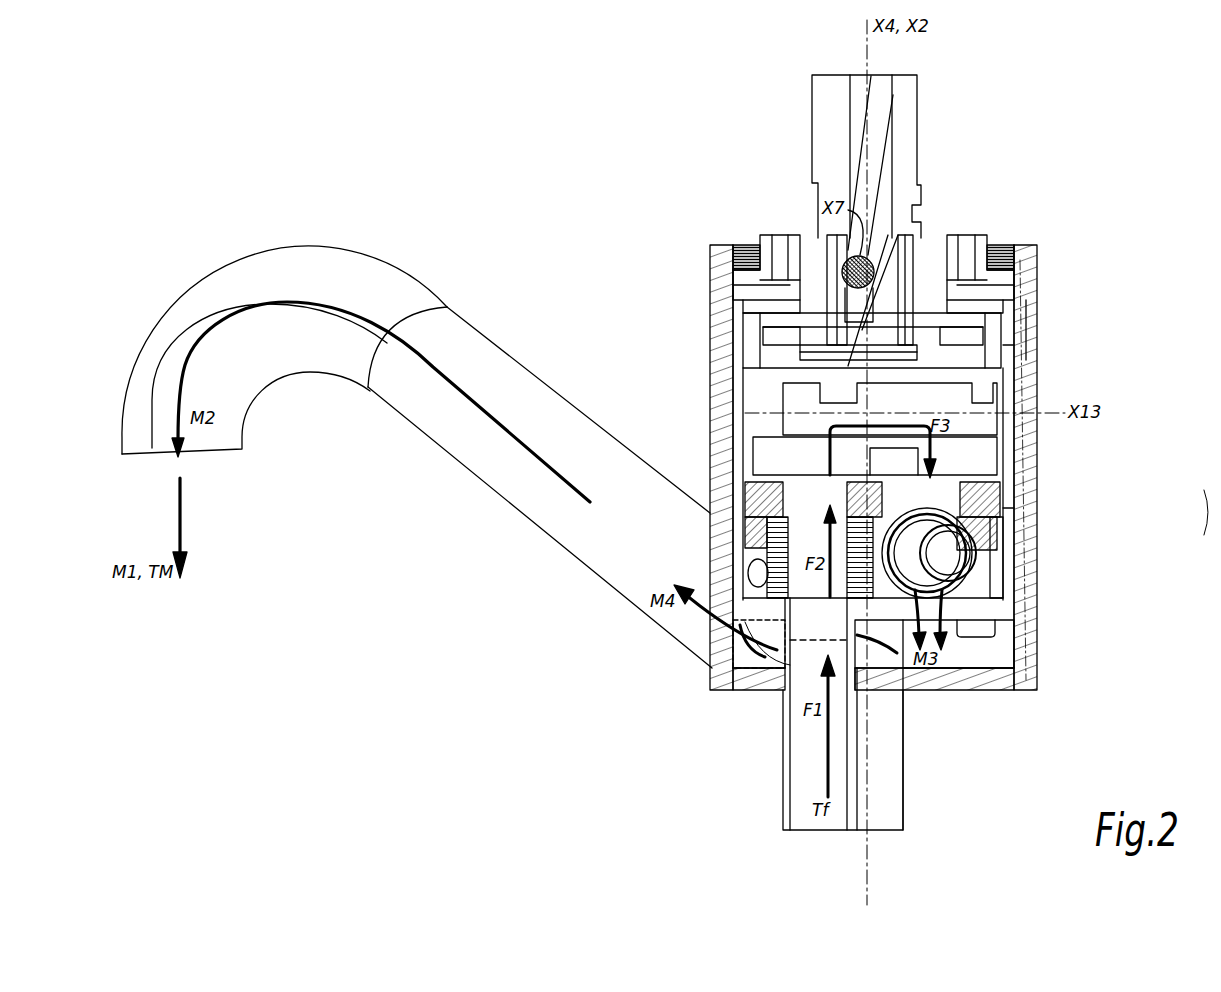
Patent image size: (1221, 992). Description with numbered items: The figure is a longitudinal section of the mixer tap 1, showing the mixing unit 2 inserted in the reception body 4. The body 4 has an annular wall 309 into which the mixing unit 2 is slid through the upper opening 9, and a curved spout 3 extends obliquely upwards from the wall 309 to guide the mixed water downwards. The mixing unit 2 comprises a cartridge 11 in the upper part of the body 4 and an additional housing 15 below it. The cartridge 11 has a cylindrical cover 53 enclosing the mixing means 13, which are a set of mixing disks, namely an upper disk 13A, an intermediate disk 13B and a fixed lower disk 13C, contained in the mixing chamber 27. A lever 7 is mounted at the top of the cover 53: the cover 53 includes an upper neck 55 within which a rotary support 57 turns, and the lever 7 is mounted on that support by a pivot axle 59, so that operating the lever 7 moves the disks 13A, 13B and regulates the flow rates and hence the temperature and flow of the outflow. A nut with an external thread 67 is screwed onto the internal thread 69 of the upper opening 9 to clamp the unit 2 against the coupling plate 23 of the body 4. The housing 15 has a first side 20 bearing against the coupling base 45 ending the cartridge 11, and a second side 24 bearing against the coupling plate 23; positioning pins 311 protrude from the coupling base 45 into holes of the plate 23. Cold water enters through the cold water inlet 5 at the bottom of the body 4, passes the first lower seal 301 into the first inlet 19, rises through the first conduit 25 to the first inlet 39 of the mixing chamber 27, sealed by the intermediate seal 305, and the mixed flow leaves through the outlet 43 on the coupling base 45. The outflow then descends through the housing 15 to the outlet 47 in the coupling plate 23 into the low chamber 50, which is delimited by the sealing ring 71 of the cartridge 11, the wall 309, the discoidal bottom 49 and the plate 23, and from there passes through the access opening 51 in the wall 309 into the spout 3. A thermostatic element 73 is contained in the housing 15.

The mixer tap 1 is at (548, 196).
The mixing unit 2 is at (1212, 512).
The spout 3 is at (292, 272).
The reception body 4 is at (1030, 437).
The cold water inlet 5 is at (805, 763).
The lever 7 is at (905, 115).
The upper opening 9 is at (1005, 245).
The cartridge 11 is at (1007, 347).
The mixing means 13 is at (780, 421).
The upper disk 13A is at (770, 378).
The intermediate disk 13B is at (785, 400).
The lower disk 13C is at (762, 455).
The additional housing 15 is at (1010, 508).
The first inlet 19 is at (832, 640).
The first side 20 is at (894, 461).
The coupling plate 23 is at (963, 690).
The second side 24 is at (752, 655).
The first conduit 25 is at (803, 633).
The mixing chamber 27 is at (708, 345).
The first inlet of the mixing chamber 39 is at (742, 534).
The outlet 43 is at (1010, 472).
The coupling base 45 is at (950, 537).
The outlet 47 is at (905, 695).
The bottom 49 is at (998, 680).
The low chamber 50 is at (1035, 658).
The access opening 51 is at (775, 690).
The cover 53 is at (708, 320).
The upper neck 55 is at (920, 253).
The rotary support 57 is at (818, 247).
The pivot axle 59 is at (868, 255).
The external thread 67 is at (750, 273).
The internal thread 69 is at (738, 245).
The sealing ring 71 is at (748, 515).
The thermostatic element 73 is at (1010, 562).
The first lower seal 301 is at (738, 625).
The intermediate seal 305 is at (745, 487).
The annular wall 309 is at (1023, 332).
The positioning pins 311 is at (1035, 635).